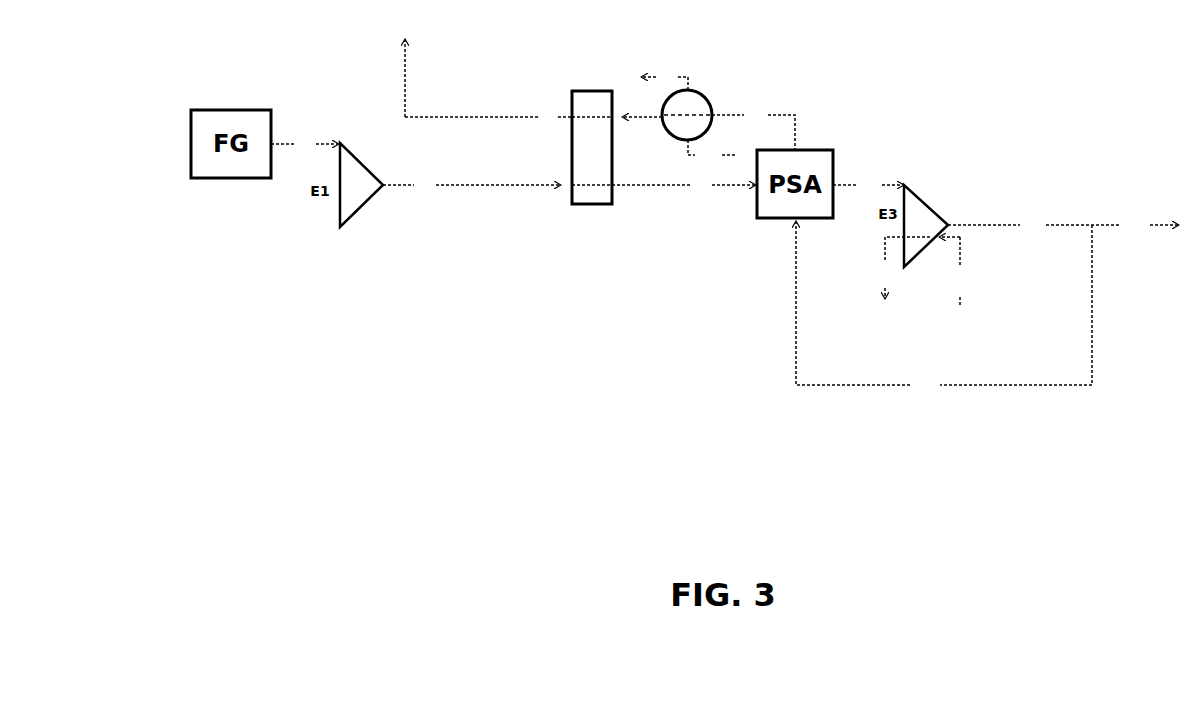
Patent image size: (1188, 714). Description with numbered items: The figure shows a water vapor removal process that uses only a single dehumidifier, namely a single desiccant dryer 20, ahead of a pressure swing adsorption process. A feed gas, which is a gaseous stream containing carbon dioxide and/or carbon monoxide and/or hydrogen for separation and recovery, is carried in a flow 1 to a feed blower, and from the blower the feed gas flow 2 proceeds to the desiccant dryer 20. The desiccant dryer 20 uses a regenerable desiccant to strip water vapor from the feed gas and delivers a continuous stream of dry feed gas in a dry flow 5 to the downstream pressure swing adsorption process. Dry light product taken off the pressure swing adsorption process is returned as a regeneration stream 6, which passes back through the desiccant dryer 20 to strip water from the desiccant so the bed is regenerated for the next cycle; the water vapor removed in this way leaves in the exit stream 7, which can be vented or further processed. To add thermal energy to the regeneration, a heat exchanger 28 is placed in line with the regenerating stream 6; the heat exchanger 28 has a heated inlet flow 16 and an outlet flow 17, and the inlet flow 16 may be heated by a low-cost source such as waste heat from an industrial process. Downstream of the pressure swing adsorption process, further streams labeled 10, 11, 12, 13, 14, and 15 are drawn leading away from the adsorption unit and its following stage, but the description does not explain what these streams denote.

The flow 1 is at (304, 145).
The FG flow 2 is at (471, 186).
The dry flow 5 is at (683, 186).
The regeneration stream 6 is at (753, 128).
The exit stream 7 is at (533, 83).
The product stream from PSA 10 is at (868, 186).
The compressed product stream 11 is at (1034, 226).
The product outlet stream 12 is at (1151, 226).
The recycle stream 13 is at (944, 308).
The purge stream 14 is at (965, 271).
The bleed stream 15 is at (917, 267).
The inlet flow 16 is at (711, 152).
The outlet flow 17 is at (665, 79).
The desiccant dryer 20 is at (587, 160).
The heat exchanger 28 is at (700, 104).